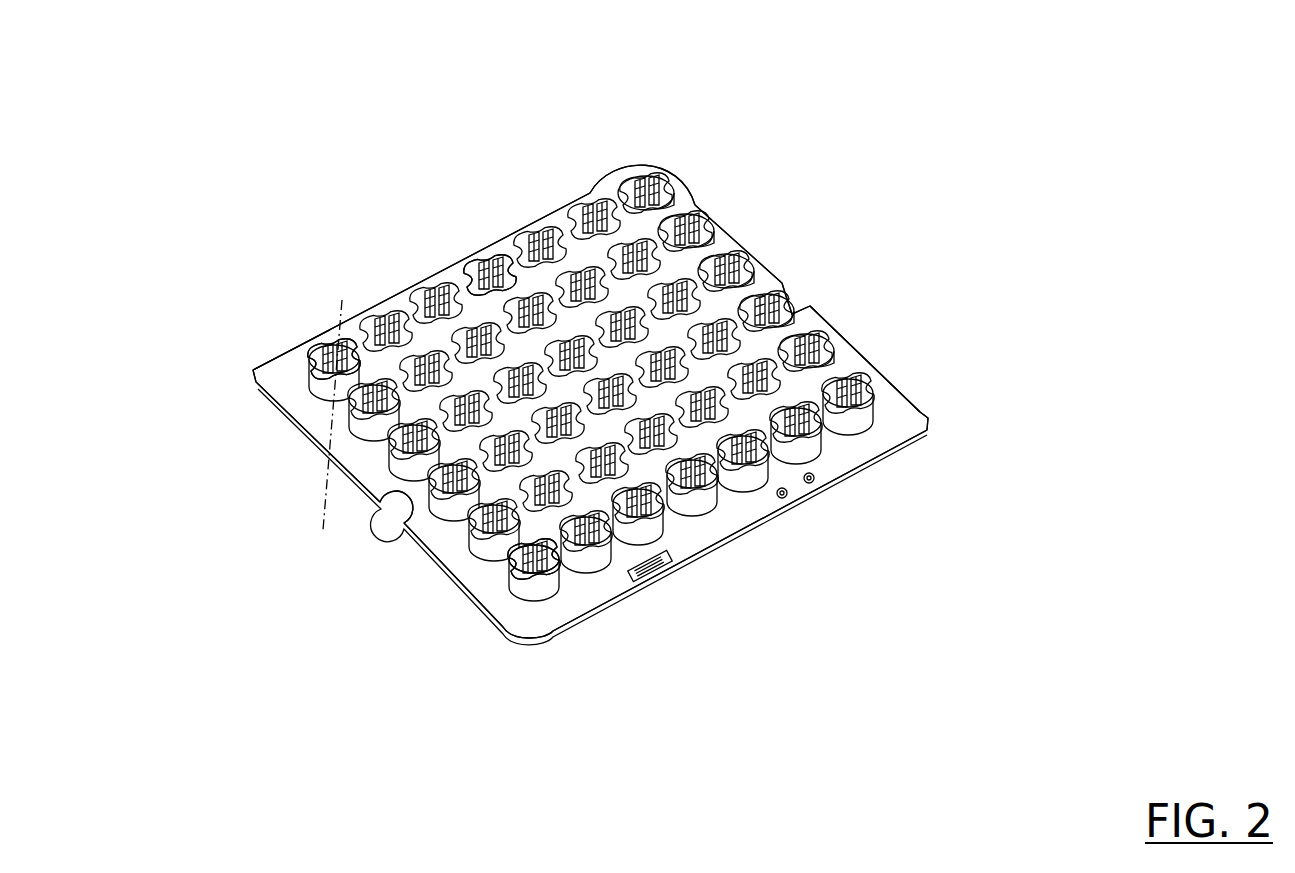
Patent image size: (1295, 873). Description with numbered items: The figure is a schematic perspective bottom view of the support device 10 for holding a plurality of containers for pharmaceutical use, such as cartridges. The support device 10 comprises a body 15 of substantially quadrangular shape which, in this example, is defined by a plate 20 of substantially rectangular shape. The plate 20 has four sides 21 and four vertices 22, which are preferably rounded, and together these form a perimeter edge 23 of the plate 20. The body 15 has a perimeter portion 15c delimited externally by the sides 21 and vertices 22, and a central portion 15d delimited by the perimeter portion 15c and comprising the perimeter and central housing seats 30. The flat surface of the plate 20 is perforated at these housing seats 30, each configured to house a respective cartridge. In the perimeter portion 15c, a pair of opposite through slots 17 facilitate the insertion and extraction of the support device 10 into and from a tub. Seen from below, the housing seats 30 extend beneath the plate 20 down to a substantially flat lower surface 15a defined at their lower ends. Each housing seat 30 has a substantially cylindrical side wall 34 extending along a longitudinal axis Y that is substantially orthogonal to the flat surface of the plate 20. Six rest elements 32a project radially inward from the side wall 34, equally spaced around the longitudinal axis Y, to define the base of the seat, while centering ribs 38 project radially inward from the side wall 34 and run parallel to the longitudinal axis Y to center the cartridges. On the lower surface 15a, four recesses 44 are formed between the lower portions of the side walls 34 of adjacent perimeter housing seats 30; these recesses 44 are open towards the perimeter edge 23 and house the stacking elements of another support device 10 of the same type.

The support device 10 is at (978, 158).
The body 15 is at (874, 272).
The lower surface 15a is at (355, 335).
The perimeter portion 15c is at (290, 366).
The central portion 15d is at (490, 313).
The through slots 17 is at (792, 292).
The plate 20 is at (863, 475).
The sides 21 is at (517, 230).
The vertices 22 is at (655, 162).
The perimeter edge 23 is at (835, 326).
The housing seats 30 is at (322, 340).
The rest elements 32a is at (566, 548).
The side wall 34 is at (542, 587).
The centering ribs 38 is at (540, 560).
The recesses 44 is at (610, 192).
The longitudinal axis Y is at (322, 497).